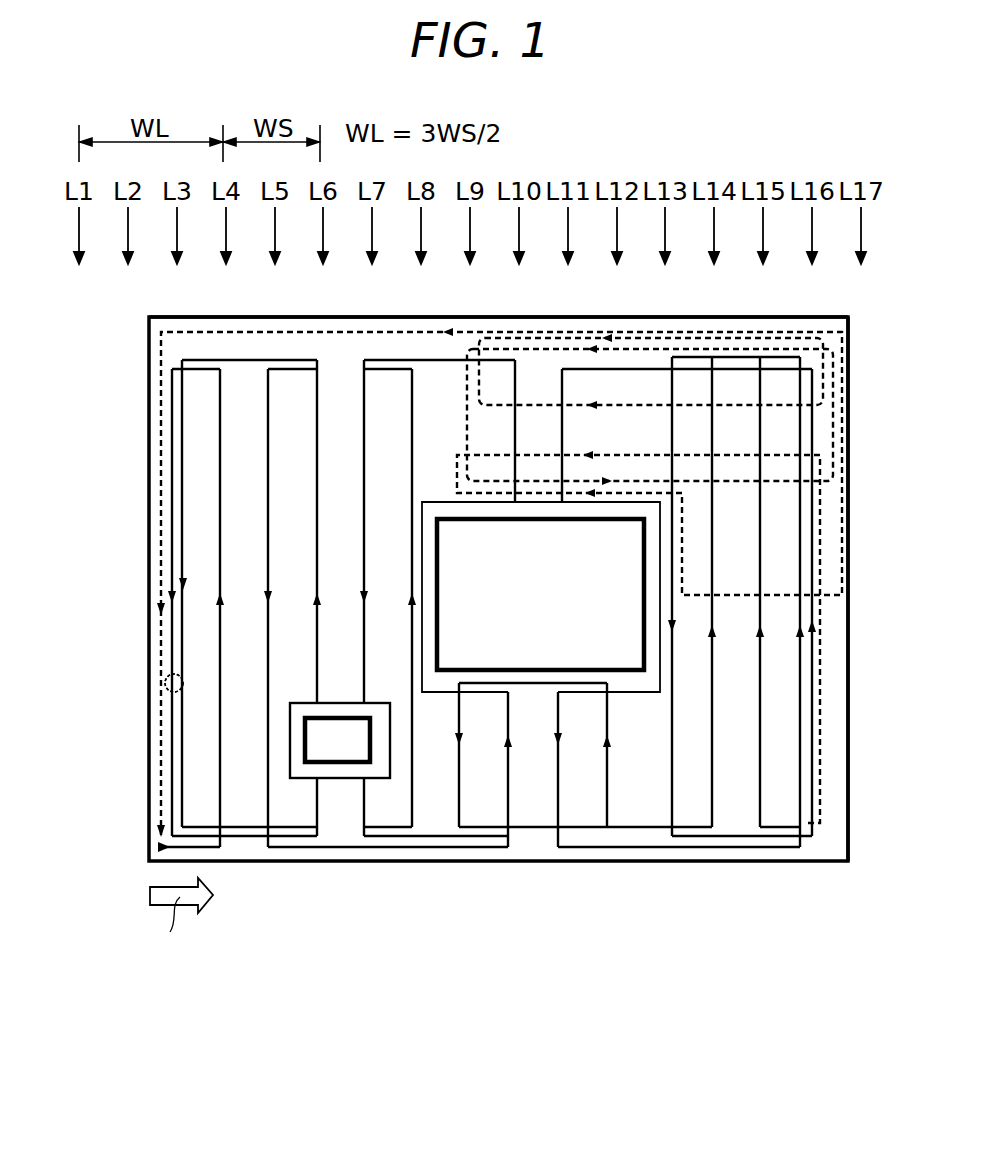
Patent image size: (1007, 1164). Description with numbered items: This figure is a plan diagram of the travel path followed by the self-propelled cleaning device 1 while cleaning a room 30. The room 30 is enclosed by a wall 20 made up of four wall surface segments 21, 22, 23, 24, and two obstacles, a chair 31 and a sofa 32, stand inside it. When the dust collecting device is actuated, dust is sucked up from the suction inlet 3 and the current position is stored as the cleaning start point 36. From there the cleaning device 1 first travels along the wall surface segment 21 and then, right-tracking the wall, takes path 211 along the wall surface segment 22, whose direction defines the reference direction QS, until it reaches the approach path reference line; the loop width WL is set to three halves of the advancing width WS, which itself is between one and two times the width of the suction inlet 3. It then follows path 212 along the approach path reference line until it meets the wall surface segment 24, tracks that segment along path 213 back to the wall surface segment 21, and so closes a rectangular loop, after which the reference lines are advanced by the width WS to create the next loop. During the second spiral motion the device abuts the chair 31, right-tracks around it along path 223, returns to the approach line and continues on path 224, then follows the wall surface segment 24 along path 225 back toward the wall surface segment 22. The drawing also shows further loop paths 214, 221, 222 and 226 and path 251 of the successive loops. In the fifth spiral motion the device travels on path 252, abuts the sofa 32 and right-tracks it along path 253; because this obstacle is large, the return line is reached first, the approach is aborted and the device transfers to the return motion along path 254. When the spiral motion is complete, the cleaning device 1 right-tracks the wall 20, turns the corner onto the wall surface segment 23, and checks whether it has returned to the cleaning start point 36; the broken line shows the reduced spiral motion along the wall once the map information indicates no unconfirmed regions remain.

The self-propelled cleaning device 1 is at (162, 694).
The suction inlet 3 is at (165, 681).
The wall 20 is at (738, 893).
The wall surface segment 21 is at (292, 668).
The wall surface segment 22 is at (805, 862).
The wall surface segment 23 is at (848, 835).
The wall surface segment 24 is at (178, 318).
The room 30 is at (478, 682).
The chair 31 is at (347, 763).
The sofa 32 is at (636, 671).
The cleaning start point 36 is at (160, 851).
The path 211 is at (222, 812).
The path 212 is at (247, 827).
The path 213 is at (205, 369).
The first electrode line 214 is at (170, 437).
The second electrode line 221 is at (300, 838).
The second electrode line 222 is at (318, 810).
The path 223 is at (290, 756).
The path 224 is at (316, 627).
The path 225 is at (228, 358).
The wiring loop (dashed) 226 is at (182, 516).
The connection line 251 is at (518, 838).
The path 252 is at (608, 798).
The path 253 is at (530, 684).
The path 254 is at (458, 812).